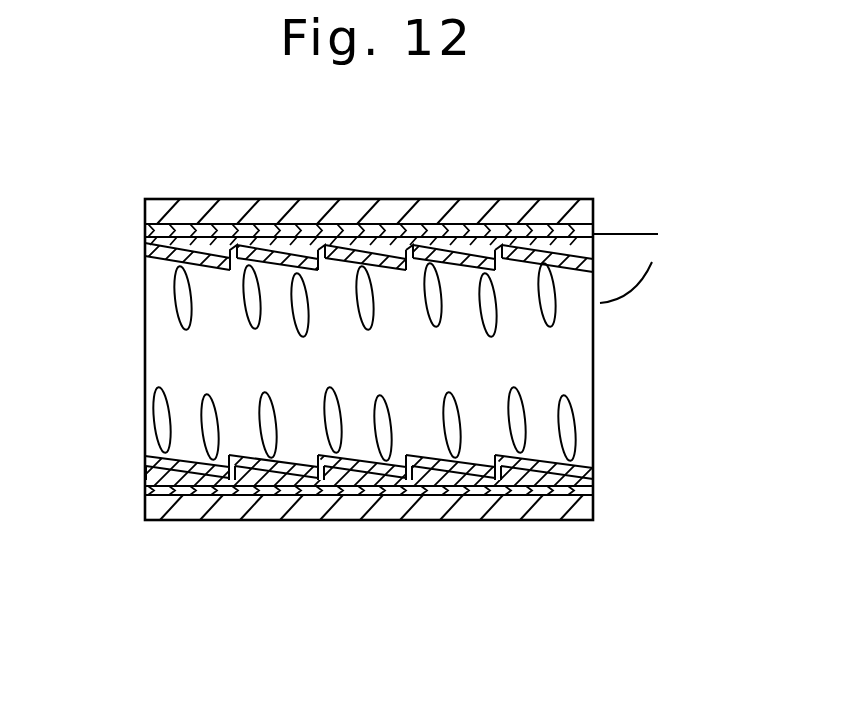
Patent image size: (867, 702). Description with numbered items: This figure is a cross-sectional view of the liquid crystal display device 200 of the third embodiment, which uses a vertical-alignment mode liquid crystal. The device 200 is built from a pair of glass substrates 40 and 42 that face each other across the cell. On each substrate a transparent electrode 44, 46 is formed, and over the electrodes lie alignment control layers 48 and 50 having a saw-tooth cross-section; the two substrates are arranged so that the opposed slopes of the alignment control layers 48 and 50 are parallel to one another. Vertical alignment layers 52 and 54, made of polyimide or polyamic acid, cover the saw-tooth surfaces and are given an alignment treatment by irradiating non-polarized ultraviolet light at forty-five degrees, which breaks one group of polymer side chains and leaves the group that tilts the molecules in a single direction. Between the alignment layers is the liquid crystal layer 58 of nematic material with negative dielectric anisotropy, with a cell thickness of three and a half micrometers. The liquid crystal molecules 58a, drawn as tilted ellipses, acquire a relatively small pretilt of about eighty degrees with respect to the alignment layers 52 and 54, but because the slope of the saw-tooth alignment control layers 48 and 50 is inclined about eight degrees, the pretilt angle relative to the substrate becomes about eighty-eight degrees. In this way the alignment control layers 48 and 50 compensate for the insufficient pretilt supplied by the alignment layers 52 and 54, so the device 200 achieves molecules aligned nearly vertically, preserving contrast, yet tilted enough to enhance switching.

The liquid crystal display device 200 is at (424, 165).
The substrate 40 is at (584, 205).
The substrate 42 is at (583, 512).
The transparent electrode 44 is at (596, 232).
The transparent electrode 46 is at (587, 490).
The alignment control layer 48 is at (558, 240).
The alignment control layer 50 is at (570, 488).
The vertical alignment layer 52 is at (517, 248).
The vertical alignment layer 54 is at (595, 458).
The liquid crystal layer 58 is at (429, 361).
The liquid crystal molecules 58a is at (556, 317).